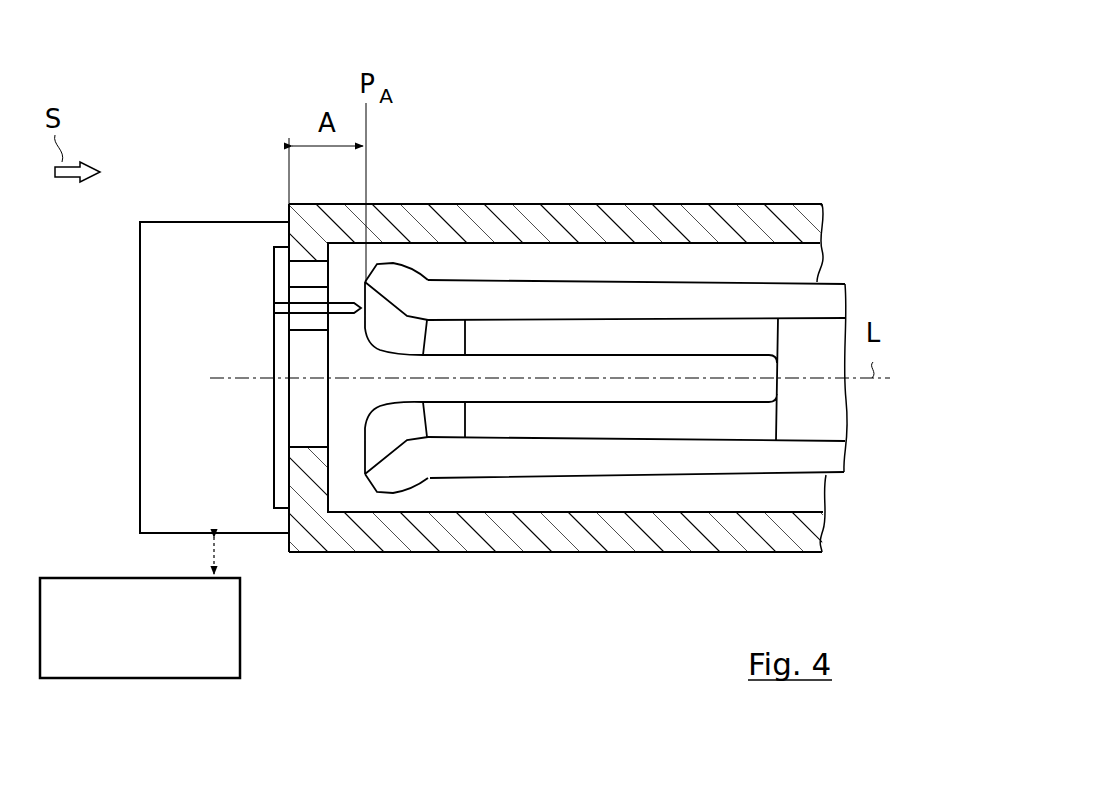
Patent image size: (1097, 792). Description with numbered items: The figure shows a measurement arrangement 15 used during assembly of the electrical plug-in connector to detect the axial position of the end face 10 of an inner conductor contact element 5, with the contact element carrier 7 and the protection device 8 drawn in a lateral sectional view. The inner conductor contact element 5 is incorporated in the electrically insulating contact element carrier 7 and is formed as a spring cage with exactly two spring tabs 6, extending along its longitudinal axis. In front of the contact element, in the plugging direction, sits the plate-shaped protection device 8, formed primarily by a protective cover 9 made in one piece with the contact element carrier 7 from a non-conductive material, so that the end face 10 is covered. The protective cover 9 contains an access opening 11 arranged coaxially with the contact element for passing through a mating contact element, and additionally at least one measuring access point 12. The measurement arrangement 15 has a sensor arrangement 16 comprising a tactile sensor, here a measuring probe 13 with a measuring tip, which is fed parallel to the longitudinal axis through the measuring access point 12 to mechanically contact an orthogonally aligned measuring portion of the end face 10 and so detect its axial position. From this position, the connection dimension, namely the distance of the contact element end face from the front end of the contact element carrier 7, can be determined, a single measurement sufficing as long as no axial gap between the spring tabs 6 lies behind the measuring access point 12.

The inner conductor contact element 5 is at (836, 273).
The spring tabs 6 is at (447, 298).
The contact element carrier 7 is at (588, 194).
The protection device 8 is at (357, 572).
The protective cover 9 is at (287, 558).
The end face 10 is at (364, 437).
The access opening 11 is at (303, 270).
The measuring access point 12 is at (313, 322).
The measuring probe 13 is at (285, 302).
The measurement arrangement 15 is at (146, 77).
The sensor arrangement 16 is at (126, 503).